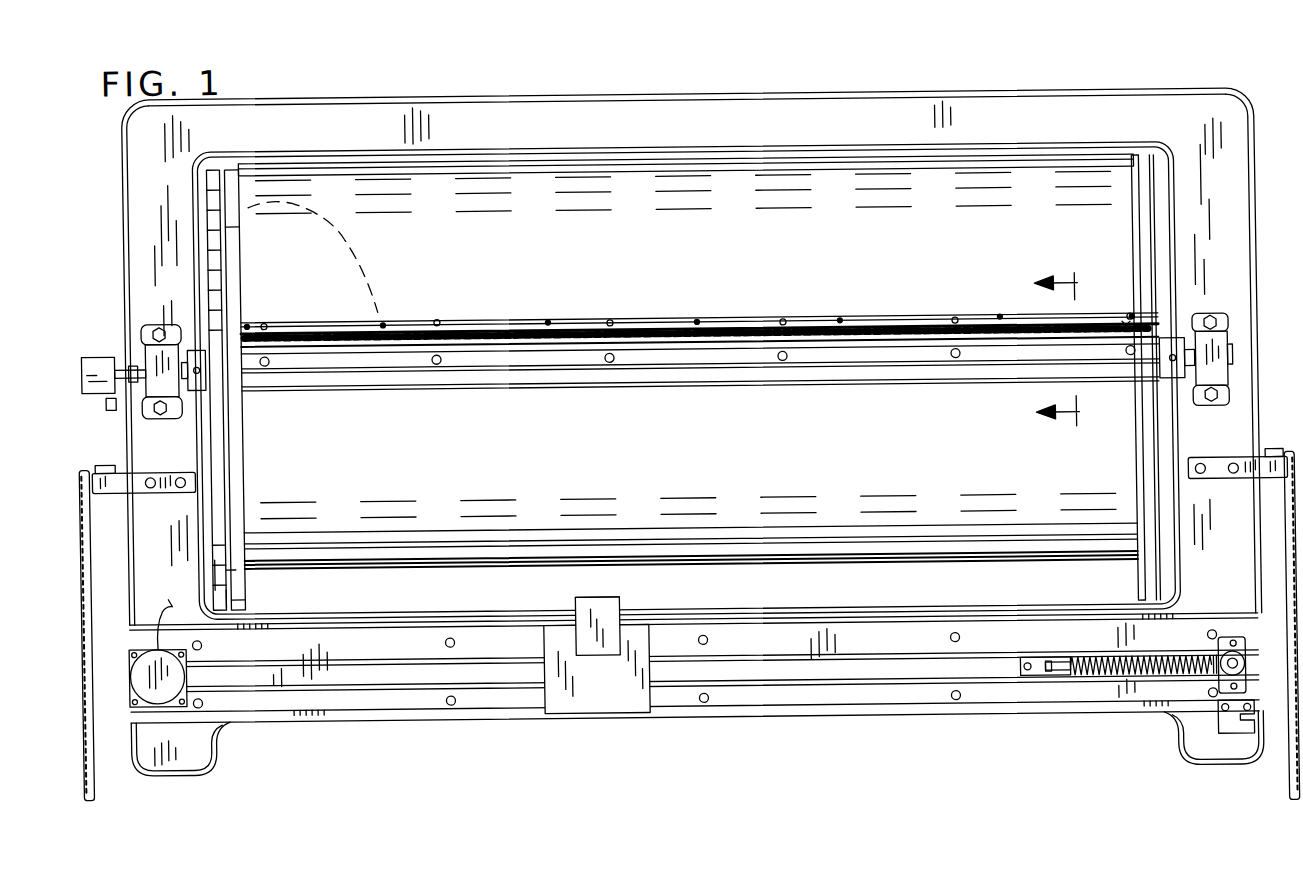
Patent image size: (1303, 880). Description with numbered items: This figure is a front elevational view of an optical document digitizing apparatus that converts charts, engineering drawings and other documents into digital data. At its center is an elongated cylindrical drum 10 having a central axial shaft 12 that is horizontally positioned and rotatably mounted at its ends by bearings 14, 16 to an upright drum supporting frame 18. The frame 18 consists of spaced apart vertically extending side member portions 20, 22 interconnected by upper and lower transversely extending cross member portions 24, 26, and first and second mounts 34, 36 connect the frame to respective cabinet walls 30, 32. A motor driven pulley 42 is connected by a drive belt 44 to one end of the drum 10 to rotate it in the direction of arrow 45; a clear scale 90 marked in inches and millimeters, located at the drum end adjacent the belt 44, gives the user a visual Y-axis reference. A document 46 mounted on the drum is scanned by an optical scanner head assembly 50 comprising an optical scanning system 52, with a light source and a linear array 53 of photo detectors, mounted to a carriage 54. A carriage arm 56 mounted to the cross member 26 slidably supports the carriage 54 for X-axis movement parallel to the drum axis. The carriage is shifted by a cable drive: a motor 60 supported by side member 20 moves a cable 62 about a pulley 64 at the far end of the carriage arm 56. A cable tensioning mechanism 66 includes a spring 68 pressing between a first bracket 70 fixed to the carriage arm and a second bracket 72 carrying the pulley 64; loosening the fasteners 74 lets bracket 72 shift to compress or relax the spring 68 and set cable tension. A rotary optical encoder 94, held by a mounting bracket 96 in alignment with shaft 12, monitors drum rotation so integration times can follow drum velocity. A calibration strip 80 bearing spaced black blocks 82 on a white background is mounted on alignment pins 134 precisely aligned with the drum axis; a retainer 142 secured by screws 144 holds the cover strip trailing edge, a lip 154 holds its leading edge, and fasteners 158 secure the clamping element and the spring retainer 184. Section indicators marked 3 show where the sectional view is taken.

The drum 10 is at (858, 178).
The central axial shaft 12 is at (1196, 330).
The bearing 14 is at (157, 319).
The bearing 16 is at (1214, 319).
The drum supporting frame 18 is at (1014, 106).
The side member portion 20 is at (135, 157).
The side member portion 22 is at (1242, 224).
The upper cross member portion 24 is at (645, 103).
The lower cross member portion 26 is at (478, 714).
The cabinet wall 30 is at (90, 770).
The cabinet wall 32 is at (1286, 758).
The first mount 34 is at (99, 498).
The second mount 36 is at (1268, 443).
The motor driven pulley 42 is at (236, 600).
The drive belt 44 is at (236, 573).
The arrow 45 is at (377, 456).
The document 46 is at (350, 234).
The optical scanner head assembly 50 is at (636, 601).
The optical scanning system 52 is at (575, 606).
The linear array 53 is at (590, 596).
The carriage 54 is at (660, 645).
The carriage arm 56 is at (394, 635).
The motor 60 is at (140, 672).
The cable 62 is at (346, 655).
The pulley 64 is at (1242, 660).
The cable tensioning mechanism 66 is at (1130, 692).
The spring 68 is at (1112, 659).
The first bracket 70 is at (1034, 660).
The second bracket 72 is at (1232, 645).
The fasteners 74 is at (1236, 692).
The calibration strip 80 is at (648, 324).
The blocks 82 is at (505, 330).
The clear scale 90 is at (243, 222).
The rotary optical encoder 94 is at (120, 345).
The mounting bracket 96 is at (118, 420).
The calibration strip alignment pins 134 is at (1134, 318).
The retainer 142 is at (900, 318).
The screws 144 is at (1130, 321).
The lip 154 is at (870, 340).
The fasteners 158 is at (1132, 360).
The spring retainer 184 is at (882, 356).
The section line for FIG. 3 is at (1069, 351).